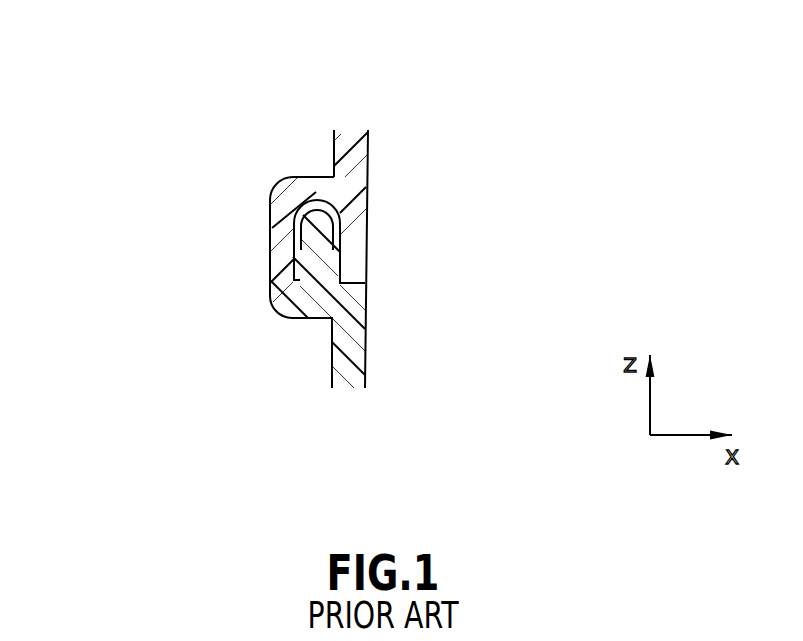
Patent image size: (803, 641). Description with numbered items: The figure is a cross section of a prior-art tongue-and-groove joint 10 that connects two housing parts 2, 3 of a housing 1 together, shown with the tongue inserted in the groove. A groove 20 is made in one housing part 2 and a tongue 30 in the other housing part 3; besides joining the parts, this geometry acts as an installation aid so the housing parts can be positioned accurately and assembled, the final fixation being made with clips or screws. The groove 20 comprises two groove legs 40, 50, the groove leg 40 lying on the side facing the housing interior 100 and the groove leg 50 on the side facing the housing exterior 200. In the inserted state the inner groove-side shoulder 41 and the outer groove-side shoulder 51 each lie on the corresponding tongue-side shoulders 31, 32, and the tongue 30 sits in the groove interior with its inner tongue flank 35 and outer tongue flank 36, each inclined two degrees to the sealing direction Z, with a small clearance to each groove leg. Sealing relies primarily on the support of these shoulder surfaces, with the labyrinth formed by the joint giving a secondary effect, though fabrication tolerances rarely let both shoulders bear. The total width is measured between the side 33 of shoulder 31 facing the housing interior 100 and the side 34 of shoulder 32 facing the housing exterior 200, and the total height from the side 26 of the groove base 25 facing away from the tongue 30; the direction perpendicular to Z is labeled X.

The housing 1 is at (105, 72).
The housing part 2 is at (350, 102).
The housing part 3 is at (350, 405).
The tongue-and-groove joint 10 is at (513, 253).
The groove 20 is at (320, 173).
The groove base 25 is at (315, 193).
The side of groove base facing away from tongue 26 is at (308, 177).
The tongue 30 is at (318, 250).
The tongue-side shoulder 31 is at (351, 297).
The tongue-side shoulder 32 is at (282, 300).
The side of tongue-side shoulder facing housing interior 33 is at (366, 295).
The side of tongue-side shoulder facing housing exterior 34 is at (271, 294).
The inner tongue flank 35 is at (339, 250).
The tongue flank 36 is at (300, 248).
The groove leg 40 is at (379, 214).
The inner groove-side shoulder 41 is at (345, 273).
The groove leg 50 is at (258, 213).
The outer groove-side shoulder 51 is at (281, 278).
The housing interior 100 is at (688, 272).
The housing exterior 200 is at (22, 282).